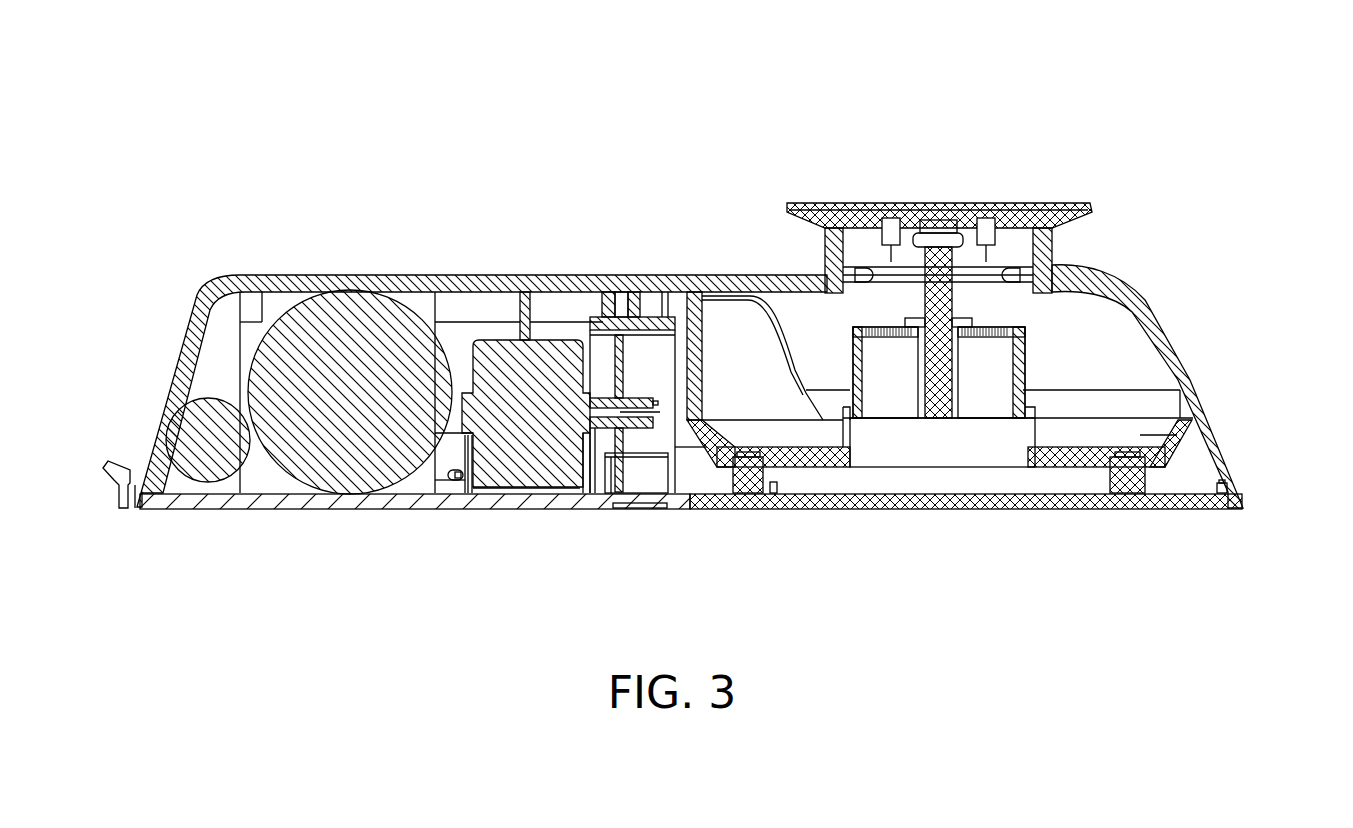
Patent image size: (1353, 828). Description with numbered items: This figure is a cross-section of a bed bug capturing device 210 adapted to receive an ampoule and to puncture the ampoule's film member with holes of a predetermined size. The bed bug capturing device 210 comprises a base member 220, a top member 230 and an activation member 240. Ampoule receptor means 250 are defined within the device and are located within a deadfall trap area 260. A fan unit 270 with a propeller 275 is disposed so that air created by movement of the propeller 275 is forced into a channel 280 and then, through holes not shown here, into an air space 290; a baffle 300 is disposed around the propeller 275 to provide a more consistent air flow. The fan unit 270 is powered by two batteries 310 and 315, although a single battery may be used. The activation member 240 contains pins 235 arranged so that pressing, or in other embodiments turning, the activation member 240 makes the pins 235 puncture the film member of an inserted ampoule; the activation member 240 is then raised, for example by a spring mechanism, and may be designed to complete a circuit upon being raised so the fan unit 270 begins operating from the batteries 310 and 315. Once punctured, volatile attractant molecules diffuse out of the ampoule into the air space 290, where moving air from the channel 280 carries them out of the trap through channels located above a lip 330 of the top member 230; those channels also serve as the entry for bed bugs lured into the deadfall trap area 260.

The bed bug capturing device 210 is at (728, 364).
The base member 220 is at (483, 500).
The top member 230 is at (1190, 407).
The pins 235 is at (988, 218).
The activation member 240 is at (1040, 223).
The ampoule receptor means 250 is at (893, 390).
The deadfall trap area 260 is at (827, 352).
The fan unit 270 is at (542, 447).
The propeller 275 is at (628, 422).
The channel 280 is at (700, 478).
The air space 290 is at (985, 305).
The baffle 300 is at (648, 323).
The battery 310 is at (205, 467).
The battery 315 is at (357, 460).
The lip 330 is at (820, 267).